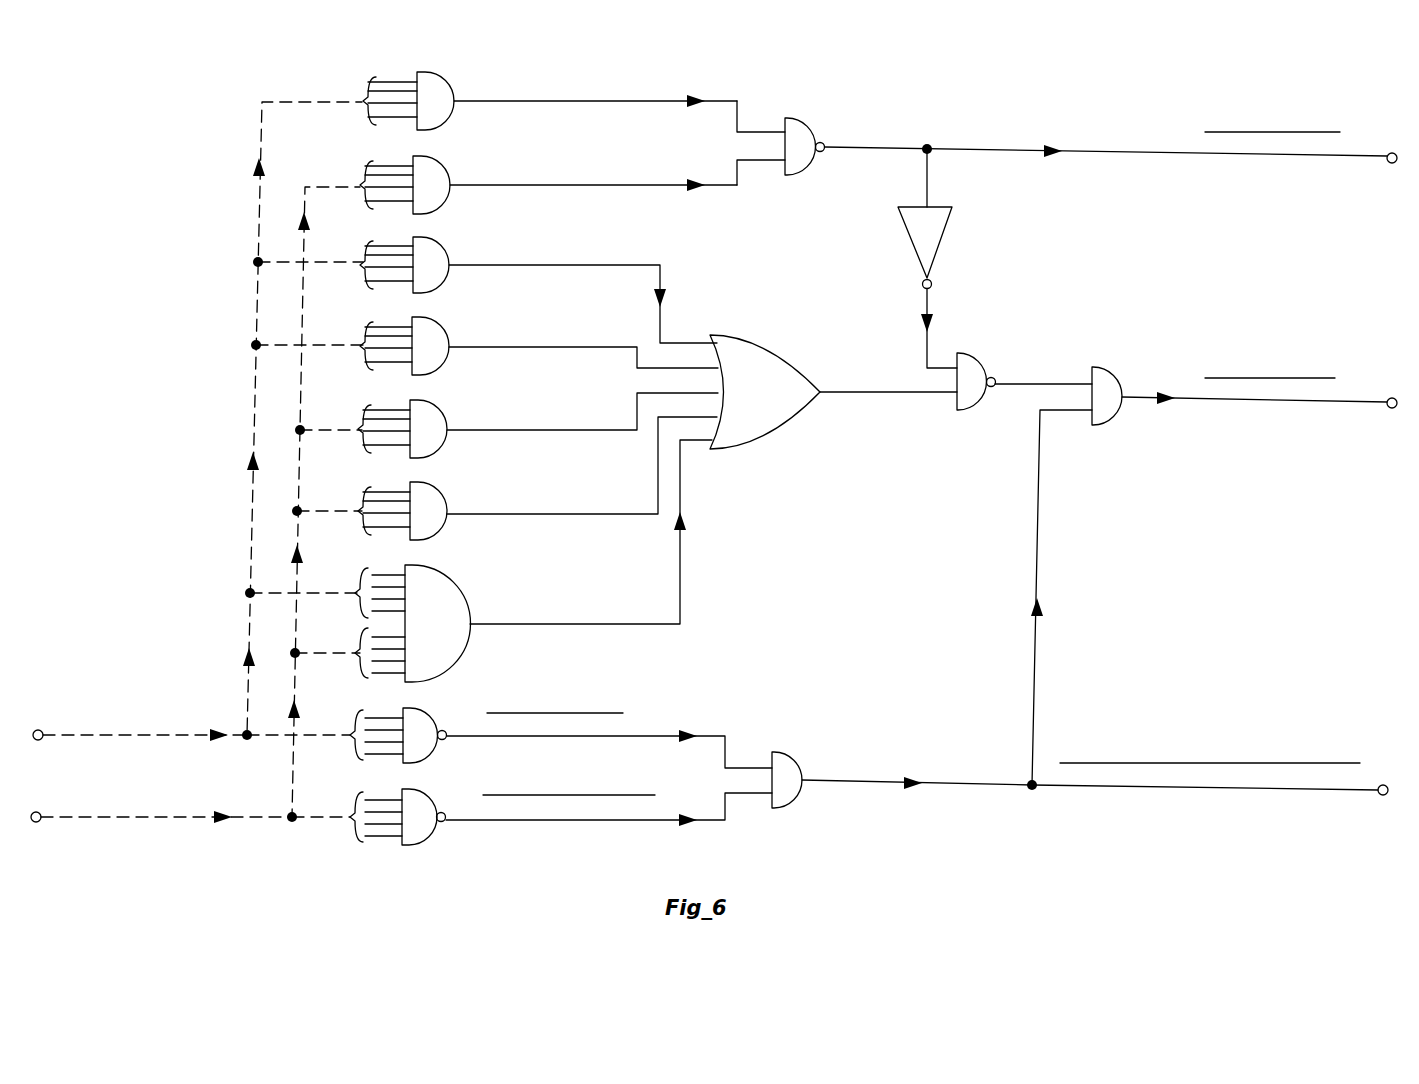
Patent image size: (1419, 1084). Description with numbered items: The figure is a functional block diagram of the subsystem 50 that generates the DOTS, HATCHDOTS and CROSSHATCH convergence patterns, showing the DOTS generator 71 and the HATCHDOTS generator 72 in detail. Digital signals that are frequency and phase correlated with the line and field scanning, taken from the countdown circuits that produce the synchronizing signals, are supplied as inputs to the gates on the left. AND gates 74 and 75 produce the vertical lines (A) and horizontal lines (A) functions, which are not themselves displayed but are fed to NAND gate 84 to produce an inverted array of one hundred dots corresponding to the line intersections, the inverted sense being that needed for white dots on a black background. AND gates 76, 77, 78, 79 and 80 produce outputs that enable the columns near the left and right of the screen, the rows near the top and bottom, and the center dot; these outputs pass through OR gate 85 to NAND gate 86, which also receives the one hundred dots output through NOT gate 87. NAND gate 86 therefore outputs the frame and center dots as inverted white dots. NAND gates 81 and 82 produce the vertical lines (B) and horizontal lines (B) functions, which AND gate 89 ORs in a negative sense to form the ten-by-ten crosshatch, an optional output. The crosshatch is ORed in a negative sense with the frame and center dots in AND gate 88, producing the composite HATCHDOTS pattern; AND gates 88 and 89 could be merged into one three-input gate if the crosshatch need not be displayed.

The subsystem 50 is at (205, 452).
The DOTS generator 71 is at (622, 68).
The HATCHDOTS generator 72 is at (868, 493).
The AND gate 74 is at (428, 72).
The AND gate 75 is at (415, 157).
The AND gate 76 is at (420, 240).
The AND gate 77 is at (418, 320).
The AND gate 78 is at (418, 402).
The AND gate 79 is at (420, 485).
The AND gate 80 is at (416, 566).
The NAND gate 81 is at (410, 708).
The NAND gate 82 is at (410, 790).
The NAND gate 84 is at (797, 118).
The OR gate 85 is at (773, 346).
The NAND gate 86 is at (1010, 344).
The NOT gate 87 is at (937, 243).
The AND gate 88 is at (1127, 346).
The AND gate 89 is at (808, 751).